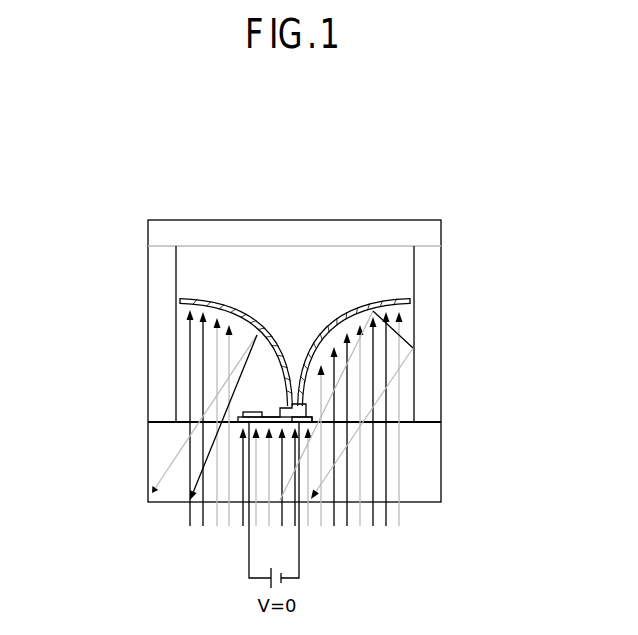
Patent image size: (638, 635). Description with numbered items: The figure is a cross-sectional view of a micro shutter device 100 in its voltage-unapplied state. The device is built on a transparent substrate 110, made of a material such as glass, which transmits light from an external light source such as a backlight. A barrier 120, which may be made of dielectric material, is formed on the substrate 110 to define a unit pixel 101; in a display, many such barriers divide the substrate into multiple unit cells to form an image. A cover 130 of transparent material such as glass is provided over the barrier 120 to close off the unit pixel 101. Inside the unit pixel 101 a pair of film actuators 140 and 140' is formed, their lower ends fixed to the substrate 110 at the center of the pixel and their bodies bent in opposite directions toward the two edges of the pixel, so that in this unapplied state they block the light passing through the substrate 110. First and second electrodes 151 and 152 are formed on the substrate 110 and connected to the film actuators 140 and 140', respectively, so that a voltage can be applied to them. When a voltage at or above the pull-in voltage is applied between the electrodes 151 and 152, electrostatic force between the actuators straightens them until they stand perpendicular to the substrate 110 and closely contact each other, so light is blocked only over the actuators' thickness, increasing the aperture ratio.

The micro shutter device 100 is at (98, 169).
The unit pixel 101 is at (217, 253).
The substrate 110 is at (440, 479).
The barrier 120 is at (430, 350).
The cover 130 is at (337, 232).
The film actuator 140 is at (412, 333).
The film actuator 140' is at (166, 337).
The first electrode 151 is at (315, 422).
The second electrode 152 is at (240, 422).